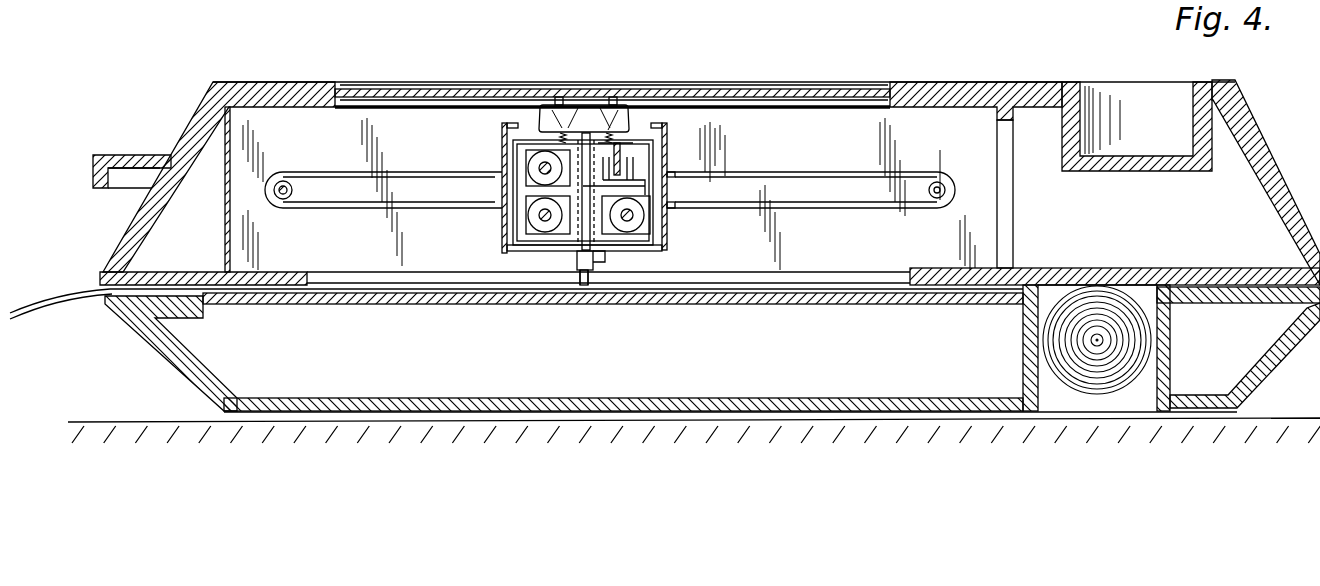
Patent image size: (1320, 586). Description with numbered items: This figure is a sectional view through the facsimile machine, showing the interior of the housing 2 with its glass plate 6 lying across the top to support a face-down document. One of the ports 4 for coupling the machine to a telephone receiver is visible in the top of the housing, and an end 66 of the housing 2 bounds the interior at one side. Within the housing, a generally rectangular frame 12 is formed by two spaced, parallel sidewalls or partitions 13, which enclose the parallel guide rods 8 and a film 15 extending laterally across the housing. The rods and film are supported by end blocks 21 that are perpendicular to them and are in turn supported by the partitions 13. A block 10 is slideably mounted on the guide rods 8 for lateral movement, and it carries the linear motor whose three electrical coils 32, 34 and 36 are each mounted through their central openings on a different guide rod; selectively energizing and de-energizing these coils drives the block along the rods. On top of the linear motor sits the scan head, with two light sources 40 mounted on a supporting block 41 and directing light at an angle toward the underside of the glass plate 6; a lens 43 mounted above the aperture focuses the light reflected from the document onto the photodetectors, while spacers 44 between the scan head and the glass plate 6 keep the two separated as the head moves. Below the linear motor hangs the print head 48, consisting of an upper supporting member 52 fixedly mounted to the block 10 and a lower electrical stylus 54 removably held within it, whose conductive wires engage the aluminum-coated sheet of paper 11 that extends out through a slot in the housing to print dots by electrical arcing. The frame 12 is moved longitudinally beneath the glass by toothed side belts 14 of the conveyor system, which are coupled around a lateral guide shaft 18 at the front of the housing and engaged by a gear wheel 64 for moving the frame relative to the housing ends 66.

The housing 2 is at (227, 81).
The port 4 is at (1090, 88).
The glass plate 6 is at (807, 90).
The guide rod 8 is at (542, 160).
The block 10 is at (524, 219).
The sheet of paper 11 is at (36, 293).
The frame 12 is at (494, 130).
The sidewall or partition 13 is at (505, 123).
The toothed side belt 14 is at (832, 167).
The film 15 is at (637, 157).
The lateral guide shaft 18 is at (280, 197).
The end block 21 is at (653, 211).
The electrical coil 32 is at (525, 153).
The electrical coil 34 is at (520, 248).
The electrical coil 36 is at (598, 258).
The light source 40 is at (550, 98).
The supporting block 41 is at (620, 113).
The lens 43 is at (582, 100).
The spacer 44 is at (597, 107).
The print head 48 is at (562, 250).
The upper supporting member 52 is at (592, 280).
The electrical stylus 54 is at (582, 270).
The gear wheel 64 is at (297, 187).
The housing end 66 is at (291, 147).